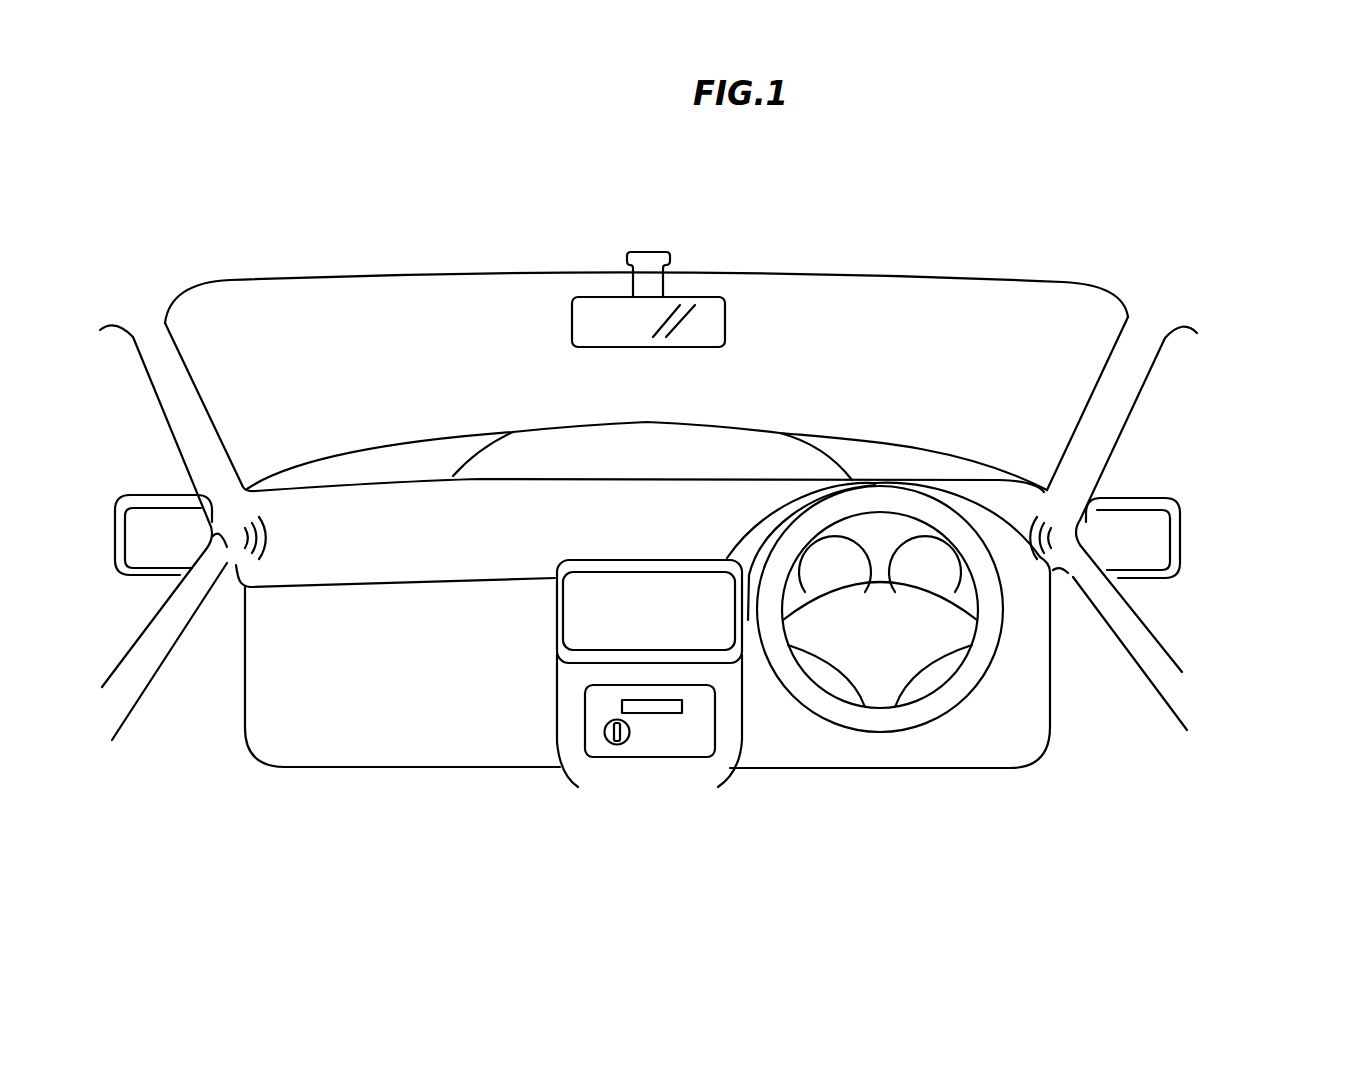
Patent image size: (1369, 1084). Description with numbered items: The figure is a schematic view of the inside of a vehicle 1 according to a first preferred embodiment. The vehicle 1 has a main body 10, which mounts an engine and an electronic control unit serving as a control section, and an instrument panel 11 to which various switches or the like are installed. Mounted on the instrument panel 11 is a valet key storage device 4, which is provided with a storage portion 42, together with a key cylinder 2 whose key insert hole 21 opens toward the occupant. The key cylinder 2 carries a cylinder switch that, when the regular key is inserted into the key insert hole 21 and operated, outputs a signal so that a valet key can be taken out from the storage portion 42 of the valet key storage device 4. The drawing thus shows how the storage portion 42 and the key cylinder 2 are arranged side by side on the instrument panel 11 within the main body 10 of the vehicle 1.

The vehicle 1 is at (848, 257).
The main body 10 is at (1105, 430).
The instrument panel 11 is at (965, 753).
The valet key storage device 4 is at (600, 765).
The storage portion 42 is at (622, 705).
The key cylinder 2 is at (633, 750).
The key insert hole 21 is at (620, 745).